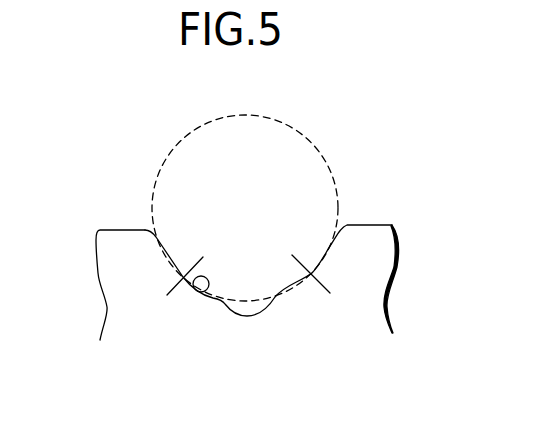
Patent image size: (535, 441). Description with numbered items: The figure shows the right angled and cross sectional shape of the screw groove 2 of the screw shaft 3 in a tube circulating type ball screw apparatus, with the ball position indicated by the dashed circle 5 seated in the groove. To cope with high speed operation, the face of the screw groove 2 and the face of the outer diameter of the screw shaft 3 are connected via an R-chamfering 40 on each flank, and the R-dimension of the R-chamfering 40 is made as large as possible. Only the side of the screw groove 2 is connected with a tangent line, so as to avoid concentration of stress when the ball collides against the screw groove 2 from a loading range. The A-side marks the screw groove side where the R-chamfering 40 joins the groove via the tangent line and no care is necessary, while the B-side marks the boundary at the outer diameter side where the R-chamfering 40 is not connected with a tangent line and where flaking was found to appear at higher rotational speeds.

The screw groove 2 is at (200, 291).
The screw shaft 3 is at (122, 268).
The reference circle 5 is at (282, 118).
The R-chamfering 40 is at (153, 224).
The A-side A is at (341, 250).
The B-side B is at (350, 220).